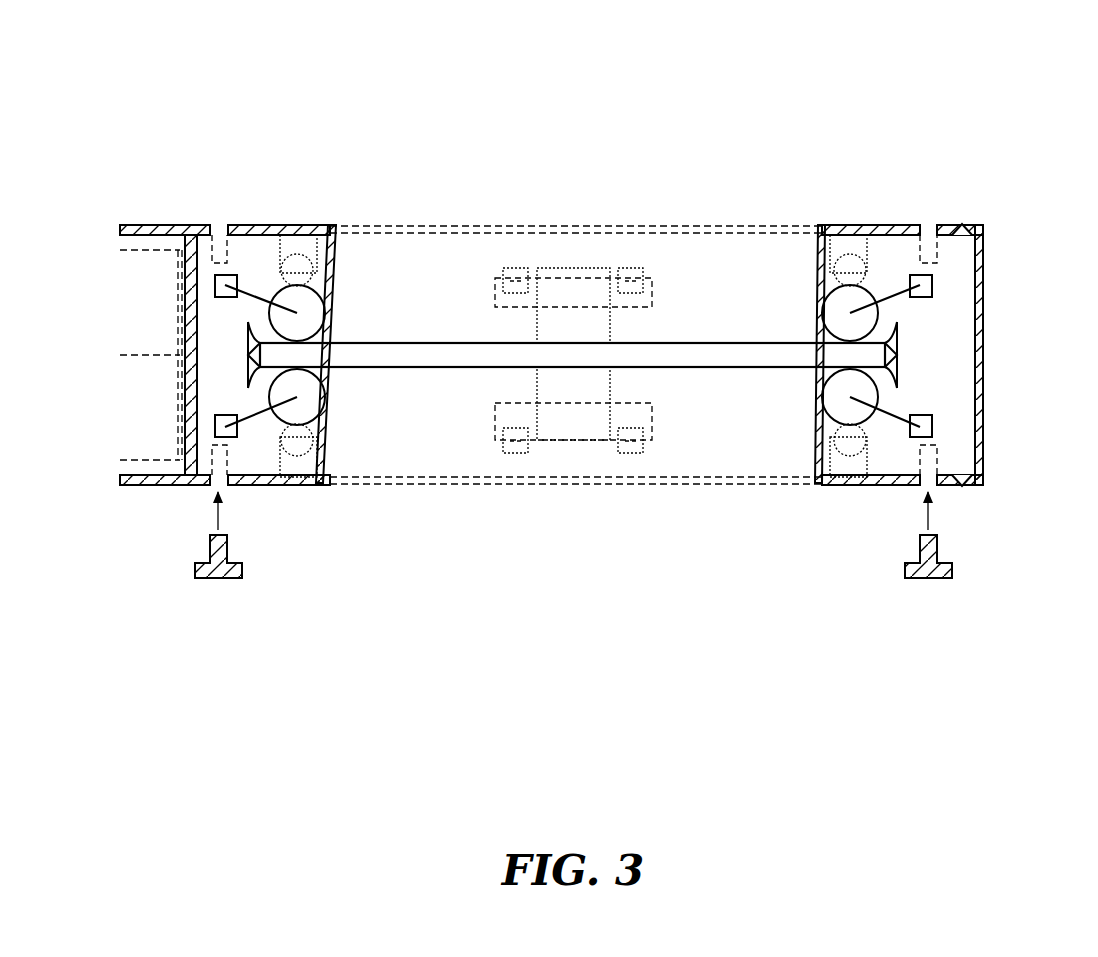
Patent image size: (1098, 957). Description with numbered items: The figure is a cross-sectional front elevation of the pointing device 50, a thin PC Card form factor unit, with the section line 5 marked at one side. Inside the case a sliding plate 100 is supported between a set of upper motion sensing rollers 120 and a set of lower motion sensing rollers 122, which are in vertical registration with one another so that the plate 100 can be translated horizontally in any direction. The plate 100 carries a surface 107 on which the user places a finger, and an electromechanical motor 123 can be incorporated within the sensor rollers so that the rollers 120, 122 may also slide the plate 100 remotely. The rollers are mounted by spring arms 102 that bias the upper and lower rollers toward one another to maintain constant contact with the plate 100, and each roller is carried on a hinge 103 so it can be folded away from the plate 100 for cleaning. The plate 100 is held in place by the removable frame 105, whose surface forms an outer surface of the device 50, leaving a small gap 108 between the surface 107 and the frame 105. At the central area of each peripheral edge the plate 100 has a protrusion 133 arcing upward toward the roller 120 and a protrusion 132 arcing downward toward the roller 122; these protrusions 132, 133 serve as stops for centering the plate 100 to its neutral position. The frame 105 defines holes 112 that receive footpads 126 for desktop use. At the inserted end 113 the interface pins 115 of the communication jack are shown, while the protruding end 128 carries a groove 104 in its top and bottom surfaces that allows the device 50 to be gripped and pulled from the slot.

The pointing device 50 is at (738, 60).
The section line 5- 5 is at (942, 130).
The sliding plate 100 is at (648, 350).
The spring arms 102 is at (250, 282).
The hinge 103 is at (510, 268).
The groove 104 is at (964, 236).
The removable frame 105 is at (333, 290).
The surface 107 is at (410, 343).
The gap 108 is at (333, 340).
The holes 112 is at (219, 234).
The inserted end 113 is at (108, 345).
The interface pins 115 is at (142, 363).
The upper motion sensing rollers 120 is at (308, 262).
The lower motion sensing rollers 122 is at (374, 478).
The electromechanical motor 123 is at (318, 236).
The footpads 126 is at (218, 580).
The protruding end 128 is at (985, 340).
The protrusion 132 is at (247, 368).
The protrusion 133 is at (247, 342).